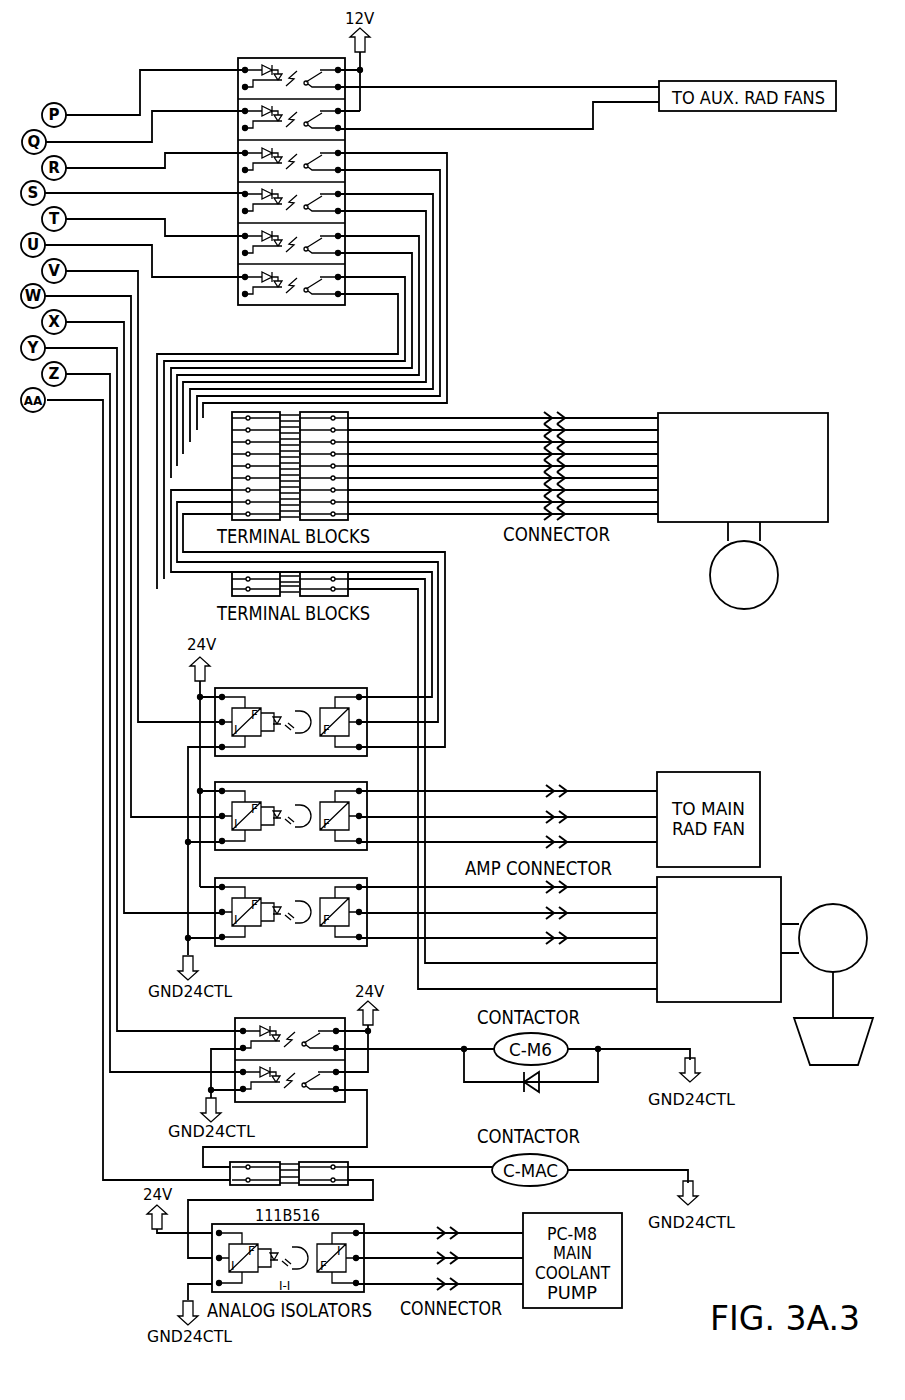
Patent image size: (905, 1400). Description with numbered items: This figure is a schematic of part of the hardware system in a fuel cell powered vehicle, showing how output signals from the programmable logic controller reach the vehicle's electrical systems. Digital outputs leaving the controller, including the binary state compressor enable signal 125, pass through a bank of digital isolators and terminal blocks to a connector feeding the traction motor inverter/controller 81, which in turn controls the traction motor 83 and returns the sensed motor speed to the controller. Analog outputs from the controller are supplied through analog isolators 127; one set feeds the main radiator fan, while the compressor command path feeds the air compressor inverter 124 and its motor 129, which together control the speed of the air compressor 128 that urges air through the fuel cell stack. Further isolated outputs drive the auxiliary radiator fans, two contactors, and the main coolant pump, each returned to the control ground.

The compressor enable signal 125 is at (290, 57).
The traction motor inverter/controller 81 is at (735, 412).
The traction motor 83 is at (770, 583).
The analog isolators 127 is at (343, 688).
The air compressor inverter 124 is at (763, 885).
The motor 129 is at (833, 906).
The air compressor 128 is at (828, 1065).